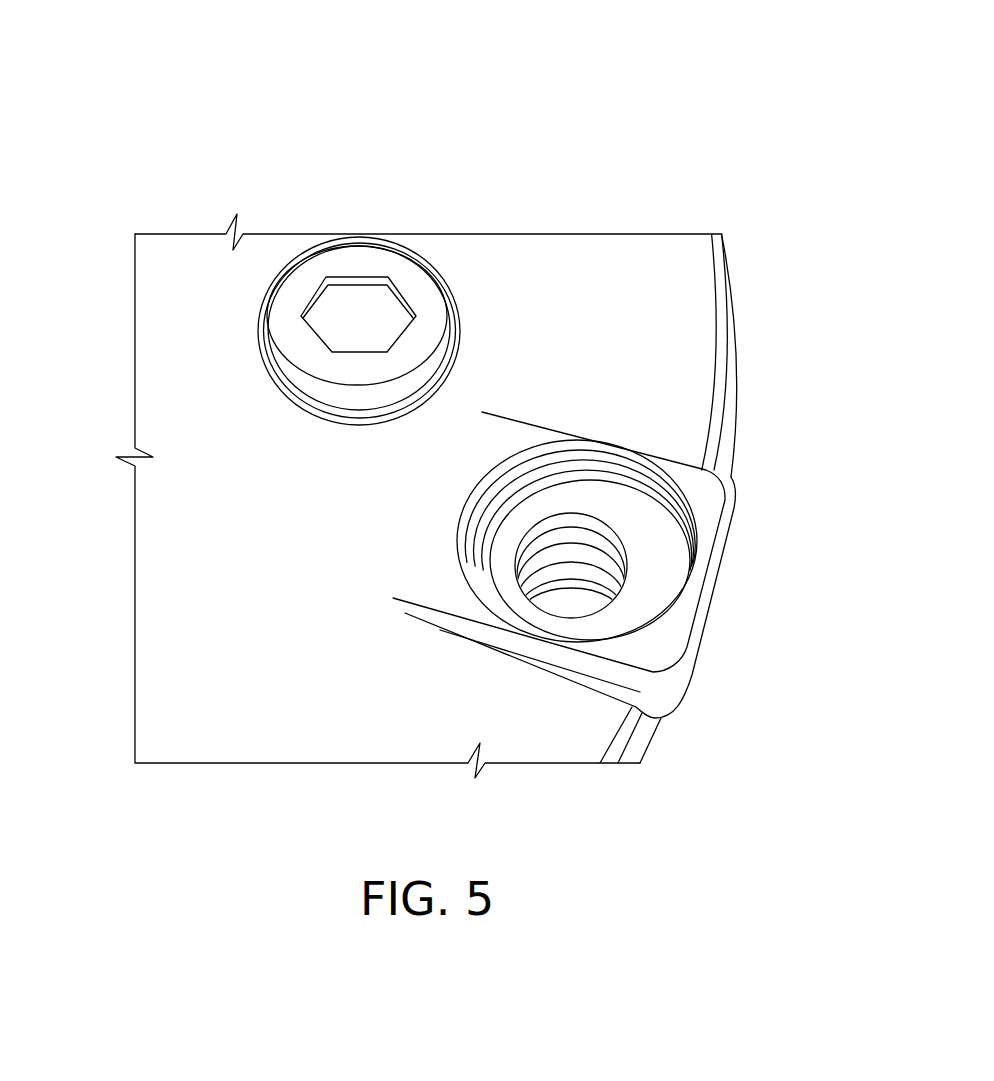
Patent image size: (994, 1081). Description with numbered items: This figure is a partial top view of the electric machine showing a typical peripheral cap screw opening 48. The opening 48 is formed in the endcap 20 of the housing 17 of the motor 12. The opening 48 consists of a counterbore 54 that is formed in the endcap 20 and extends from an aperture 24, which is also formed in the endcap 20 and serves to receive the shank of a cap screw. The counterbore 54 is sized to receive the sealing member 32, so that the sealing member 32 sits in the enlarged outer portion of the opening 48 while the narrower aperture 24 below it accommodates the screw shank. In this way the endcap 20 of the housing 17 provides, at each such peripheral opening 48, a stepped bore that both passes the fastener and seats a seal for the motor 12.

The motor 12 is at (686, 70).
The housing 17 is at (686, 179).
The endcap 20 is at (508, 238).
The aperture 24 is at (513, 585).
The sealing member 32 is at (303, 205).
The peripheral cap screw opening 48 is at (430, 536).
The counterbore 54 is at (570, 475).